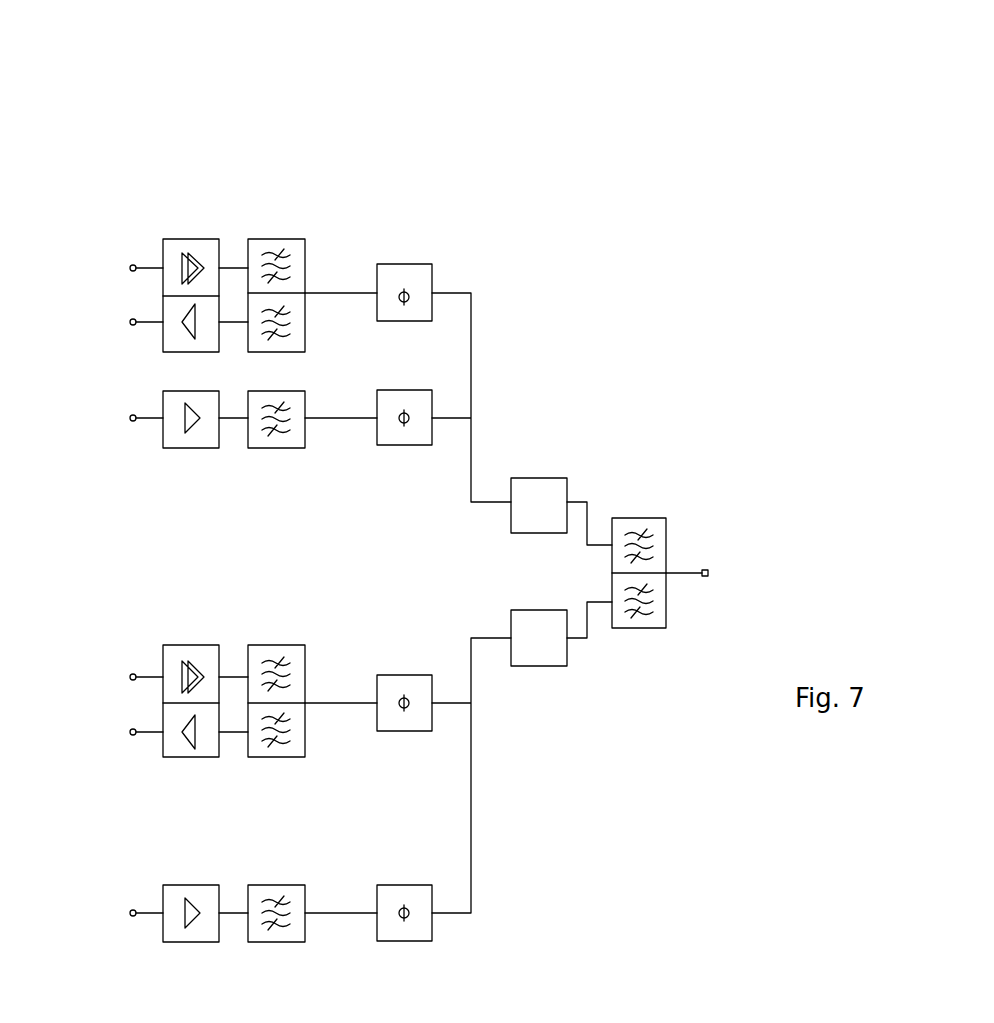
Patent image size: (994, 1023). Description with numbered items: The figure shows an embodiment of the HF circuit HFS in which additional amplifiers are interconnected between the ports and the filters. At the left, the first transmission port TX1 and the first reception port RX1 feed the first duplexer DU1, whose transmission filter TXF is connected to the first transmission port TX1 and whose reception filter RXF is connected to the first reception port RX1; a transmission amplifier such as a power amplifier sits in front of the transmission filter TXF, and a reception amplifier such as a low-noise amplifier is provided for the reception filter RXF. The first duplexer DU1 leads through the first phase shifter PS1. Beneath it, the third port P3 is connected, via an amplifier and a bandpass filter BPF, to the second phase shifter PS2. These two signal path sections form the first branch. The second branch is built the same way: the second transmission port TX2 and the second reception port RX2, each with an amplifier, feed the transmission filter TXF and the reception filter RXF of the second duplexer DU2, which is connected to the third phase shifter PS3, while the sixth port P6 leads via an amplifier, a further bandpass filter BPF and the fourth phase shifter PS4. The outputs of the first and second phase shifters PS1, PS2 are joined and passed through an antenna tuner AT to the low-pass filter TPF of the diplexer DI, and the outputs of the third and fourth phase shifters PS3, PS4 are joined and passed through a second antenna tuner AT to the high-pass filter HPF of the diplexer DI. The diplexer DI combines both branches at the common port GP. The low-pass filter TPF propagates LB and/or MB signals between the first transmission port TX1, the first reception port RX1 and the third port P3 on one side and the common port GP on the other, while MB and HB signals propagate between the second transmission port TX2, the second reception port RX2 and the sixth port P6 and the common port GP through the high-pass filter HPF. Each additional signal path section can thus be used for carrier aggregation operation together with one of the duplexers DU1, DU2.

The HF circuit HFS is at (628, 63).
The first transmission port TX1 is at (130, 268).
The first reception port RX1 is at (130, 322).
The third port P3 is at (130, 418).
The second transmission port TX2 is at (130, 677).
The second reception port RX2 is at (130, 732).
The sixth port P6 is at (130, 913).
The first duplexer DU1 is at (326, 228).
The second duplexer DU2 is at (292, 706).
The bandpass filter BPF is at (307, 403).
The first phase shifter PS1 is at (398, 264).
The second phase shifter PS2 is at (417, 445).
The third phase shifter PS3 is at (413, 675).
The fourth phase shifter PS4 is at (417, 941).
The antenna tuner AT is at (532, 478).
The diplexer DI is at (682, 580).
The low-pass filter TPF is at (627, 518).
The high-pass filter HPF is at (653, 628).
The common port GP is at (708, 575).
The transmission filter TXF is at (256, 645).
The reception filter RXF is at (305, 727).